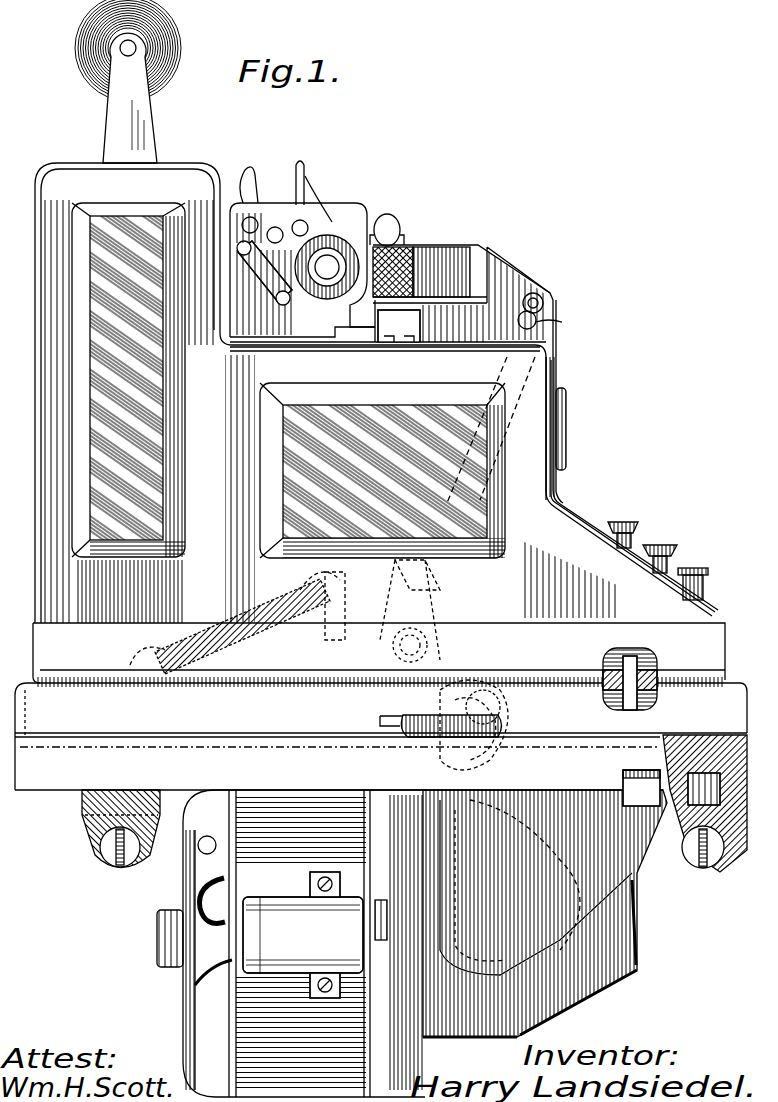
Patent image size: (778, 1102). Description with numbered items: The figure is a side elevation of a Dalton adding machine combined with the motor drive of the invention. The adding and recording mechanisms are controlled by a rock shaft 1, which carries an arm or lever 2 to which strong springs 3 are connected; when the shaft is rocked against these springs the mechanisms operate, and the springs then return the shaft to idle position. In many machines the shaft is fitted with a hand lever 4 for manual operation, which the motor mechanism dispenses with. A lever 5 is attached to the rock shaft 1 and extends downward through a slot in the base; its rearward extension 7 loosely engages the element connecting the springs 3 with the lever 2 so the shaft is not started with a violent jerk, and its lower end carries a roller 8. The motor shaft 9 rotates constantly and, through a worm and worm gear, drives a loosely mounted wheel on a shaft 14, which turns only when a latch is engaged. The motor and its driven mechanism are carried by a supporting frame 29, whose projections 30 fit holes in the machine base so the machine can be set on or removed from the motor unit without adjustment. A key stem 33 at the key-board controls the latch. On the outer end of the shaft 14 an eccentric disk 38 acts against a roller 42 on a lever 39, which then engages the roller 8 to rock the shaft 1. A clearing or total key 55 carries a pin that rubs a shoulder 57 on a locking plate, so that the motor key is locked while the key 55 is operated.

The rock shaft 1 is at (420, 647).
The arm or lever 2 is at (440, 592).
The springs 3 is at (265, 598).
The hand lever 4 is at (505, 540).
The lever 5 is at (385, 718).
The rearward extension 7 is at (333, 570).
The roller 8 is at (500, 730).
The motor shaft 9 is at (157, 935).
The shaft 14 is at (640, 885).
The supporting frame 29 is at (540, 785).
The projections 30 is at (640, 665).
The key stem 33 is at (704, 592).
The eccentric disk 38 is at (640, 920).
The lever 39 is at (640, 945).
The roller 42 is at (430, 1040).
The key 55 is at (665, 562).
The shoulder 57 is at (708, 571).